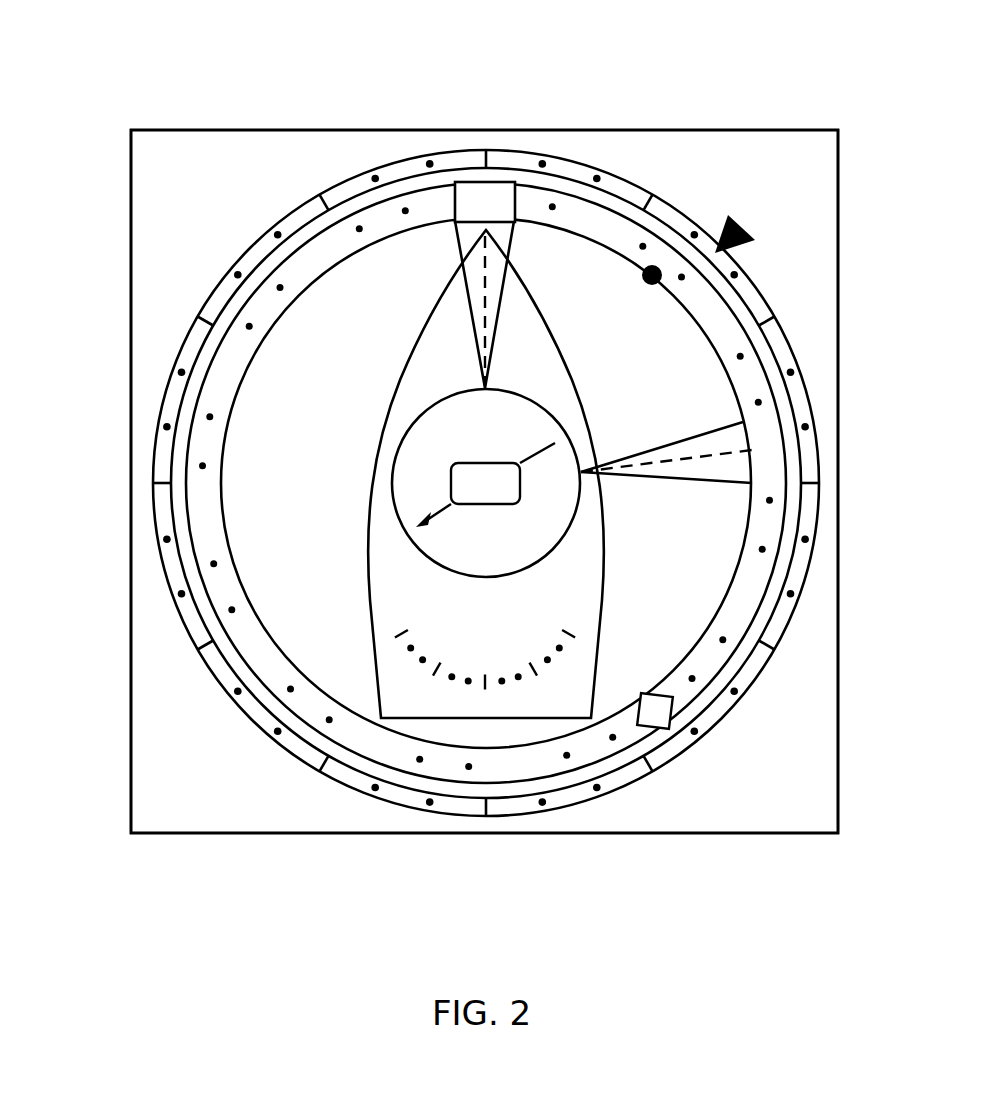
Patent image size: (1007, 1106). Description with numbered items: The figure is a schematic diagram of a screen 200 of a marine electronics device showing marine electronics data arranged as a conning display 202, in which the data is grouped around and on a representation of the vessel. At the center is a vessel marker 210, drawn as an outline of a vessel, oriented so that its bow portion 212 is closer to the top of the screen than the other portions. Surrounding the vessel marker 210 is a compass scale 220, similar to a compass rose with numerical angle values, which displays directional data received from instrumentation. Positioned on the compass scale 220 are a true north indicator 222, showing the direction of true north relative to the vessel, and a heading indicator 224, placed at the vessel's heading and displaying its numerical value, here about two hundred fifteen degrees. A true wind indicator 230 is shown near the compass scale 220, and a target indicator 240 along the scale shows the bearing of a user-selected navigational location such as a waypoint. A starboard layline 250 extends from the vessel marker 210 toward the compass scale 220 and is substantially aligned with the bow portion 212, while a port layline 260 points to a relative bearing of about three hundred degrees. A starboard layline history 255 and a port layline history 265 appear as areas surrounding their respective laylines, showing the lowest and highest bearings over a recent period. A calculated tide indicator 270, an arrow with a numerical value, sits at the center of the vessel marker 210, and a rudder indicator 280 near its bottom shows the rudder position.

The screen 200 is at (203, 78).
The conning display 202 is at (180, 181).
The vessel marker 210 is at (398, 706).
The bow portion 212 is at (457, 235).
The compass scale 220 is at (225, 594).
The true north indicator 222 is at (652, 728).
The heading indicator 224 is at (494, 182).
The true wind indicator 230 is at (745, 231).
The target indicator 240 is at (652, 268).
The starboard layline 250 is at (485, 253).
The starboard layline history 255 is at (473, 277).
The port layline 260 is at (685, 460).
The port layline history 265 is at (717, 443).
The calculated tide indicator 270 is at (437, 443).
The rudder indicator 280 is at (487, 690).